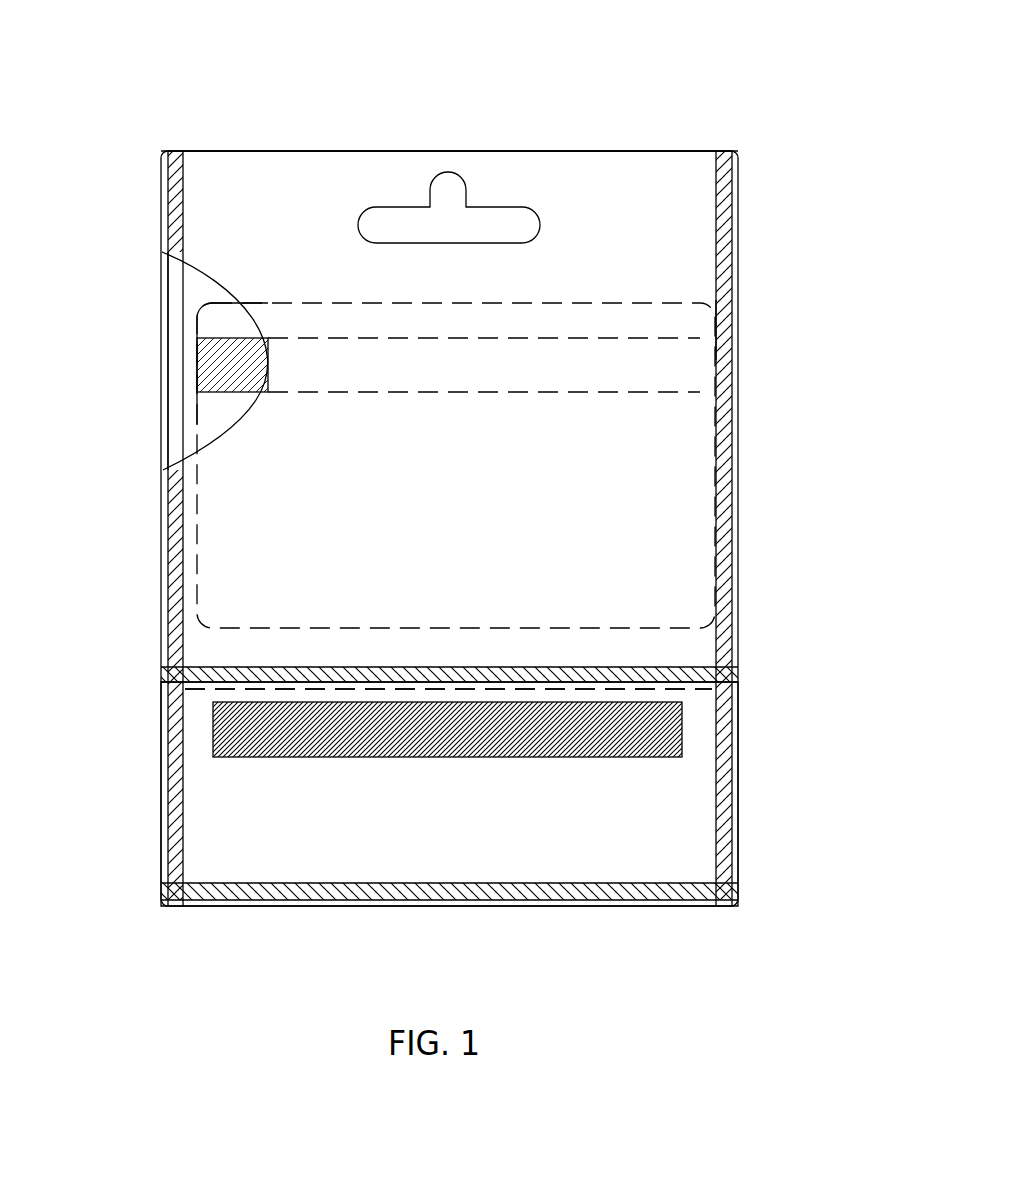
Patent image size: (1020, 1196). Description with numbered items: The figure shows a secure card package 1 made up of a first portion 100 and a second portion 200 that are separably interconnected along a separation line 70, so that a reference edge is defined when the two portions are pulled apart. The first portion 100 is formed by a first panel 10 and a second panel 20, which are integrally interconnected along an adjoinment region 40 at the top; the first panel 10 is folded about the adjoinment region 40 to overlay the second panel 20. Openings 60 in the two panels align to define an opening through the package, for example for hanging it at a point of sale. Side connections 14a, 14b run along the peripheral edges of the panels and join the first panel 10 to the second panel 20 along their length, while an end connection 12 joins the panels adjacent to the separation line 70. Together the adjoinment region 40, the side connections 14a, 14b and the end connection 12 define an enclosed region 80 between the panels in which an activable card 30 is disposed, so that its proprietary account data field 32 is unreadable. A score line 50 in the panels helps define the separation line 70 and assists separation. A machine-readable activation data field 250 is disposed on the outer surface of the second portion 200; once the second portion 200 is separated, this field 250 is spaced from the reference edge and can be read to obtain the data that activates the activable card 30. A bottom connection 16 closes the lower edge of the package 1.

The secure card package 1 is at (672, 100).
The first panel 10 is at (584, 160).
The end connection 12 is at (208, 667).
The side connection 14a is at (176, 518).
The side connection 14b is at (735, 332).
The bottom seal 16 is at (653, 890).
The second panel 20 is at (193, 280).
The activable card 30 is at (212, 428).
The proprietary account data field 32 is at (218, 372).
The adjoinment region 40 is at (278, 150).
The score line 50 is at (688, 690).
The opening 60 is at (512, 230).
The separation line 70 is at (200, 692).
The enclosed region 80 is at (218, 294).
The first portion 100 is at (762, 210).
The second portion 200 is at (760, 768).
The machine-readable activation data field 250 is at (432, 729).